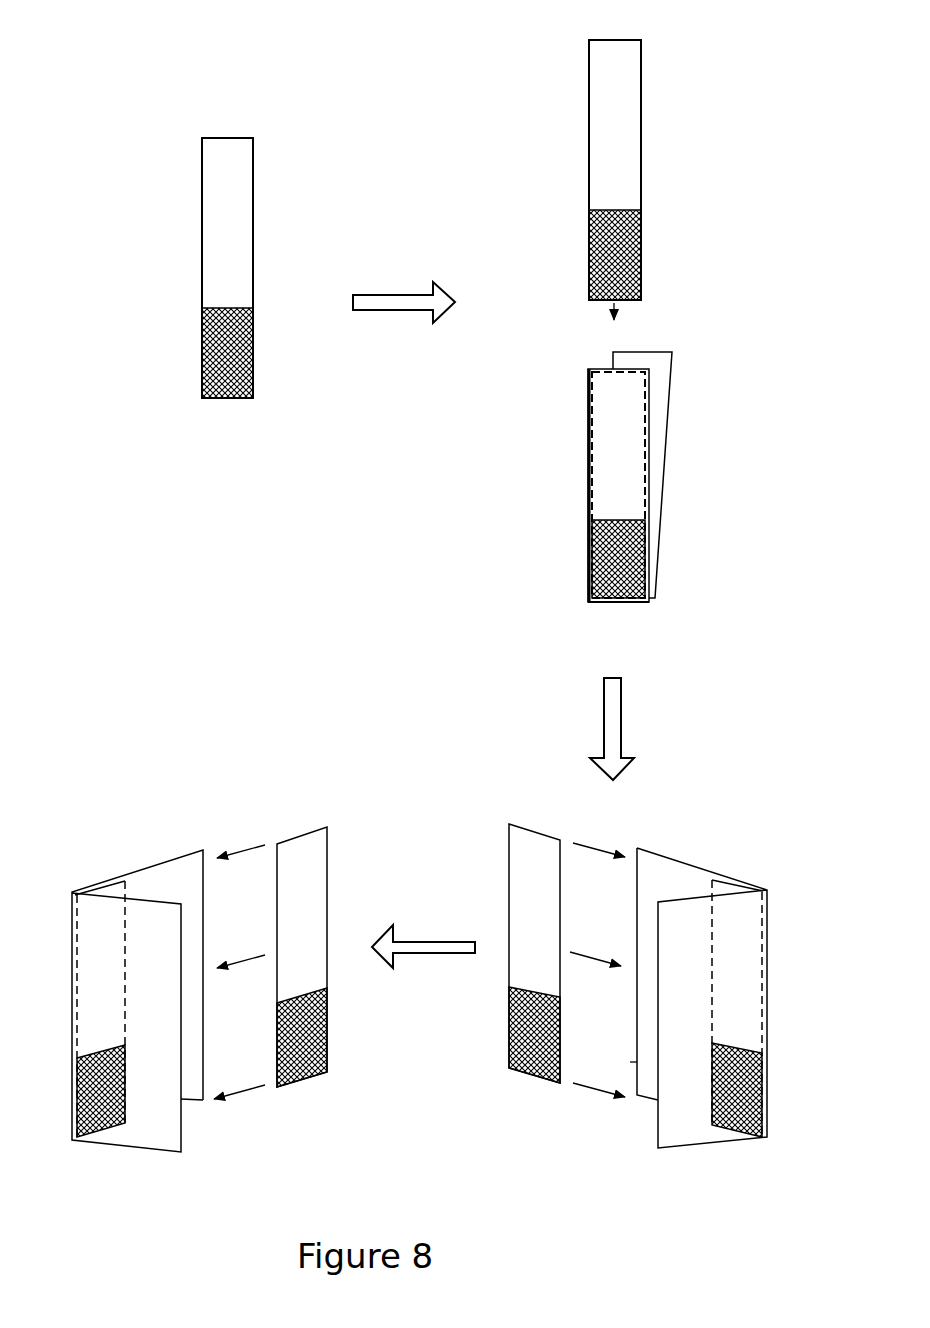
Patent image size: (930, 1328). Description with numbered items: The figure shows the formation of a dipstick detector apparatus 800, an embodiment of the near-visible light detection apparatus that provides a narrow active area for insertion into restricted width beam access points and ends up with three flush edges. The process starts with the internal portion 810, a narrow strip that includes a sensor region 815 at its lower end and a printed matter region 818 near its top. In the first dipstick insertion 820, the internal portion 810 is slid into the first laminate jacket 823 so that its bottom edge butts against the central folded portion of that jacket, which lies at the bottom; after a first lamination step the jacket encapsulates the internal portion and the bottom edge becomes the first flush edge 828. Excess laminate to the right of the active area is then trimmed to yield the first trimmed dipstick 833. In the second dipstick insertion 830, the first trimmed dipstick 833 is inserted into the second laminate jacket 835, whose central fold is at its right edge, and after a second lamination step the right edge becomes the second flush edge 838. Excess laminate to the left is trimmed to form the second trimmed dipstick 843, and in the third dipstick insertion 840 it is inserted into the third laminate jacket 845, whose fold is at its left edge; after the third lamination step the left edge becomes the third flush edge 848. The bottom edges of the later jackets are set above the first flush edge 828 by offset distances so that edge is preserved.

The dipstick detector apparatus 800 is at (120, 86).
The internal portion 810 is at (228, 130).
The sensor region 815 is at (202, 362).
The printed matter region 818 is at (252, 170).
The first dipstick insertion 820 is at (722, 427).
The first laminate jacket 823 is at (660, 360).
The first flush edge 828 is at (633, 599).
The second dipstick insertion 830 is at (702, 829).
The first trimmed dipstick 833 is at (525, 1090).
The second laminate jacket 835 is at (675, 1130).
The second flush edge 838 is at (758, 1078).
The third dipstick insertion 840 is at (98, 834).
The second trimmed dipstick 843 is at (85, 922).
The third laminate jacket 845 is at (155, 878).
The third flush edge 848 is at (78, 1100).